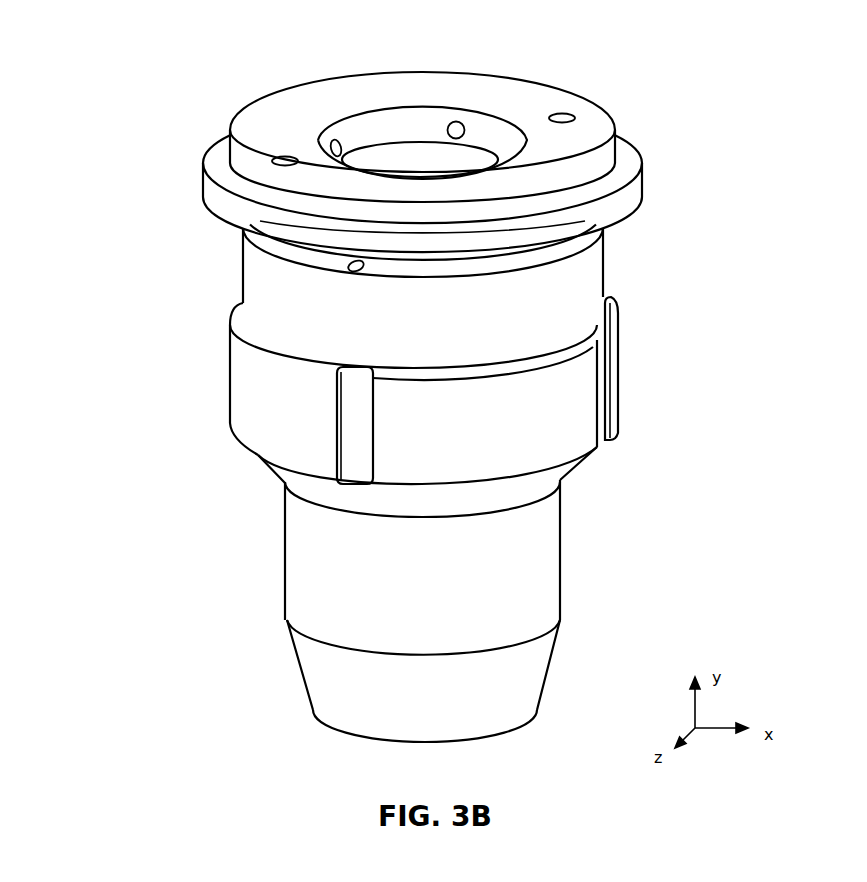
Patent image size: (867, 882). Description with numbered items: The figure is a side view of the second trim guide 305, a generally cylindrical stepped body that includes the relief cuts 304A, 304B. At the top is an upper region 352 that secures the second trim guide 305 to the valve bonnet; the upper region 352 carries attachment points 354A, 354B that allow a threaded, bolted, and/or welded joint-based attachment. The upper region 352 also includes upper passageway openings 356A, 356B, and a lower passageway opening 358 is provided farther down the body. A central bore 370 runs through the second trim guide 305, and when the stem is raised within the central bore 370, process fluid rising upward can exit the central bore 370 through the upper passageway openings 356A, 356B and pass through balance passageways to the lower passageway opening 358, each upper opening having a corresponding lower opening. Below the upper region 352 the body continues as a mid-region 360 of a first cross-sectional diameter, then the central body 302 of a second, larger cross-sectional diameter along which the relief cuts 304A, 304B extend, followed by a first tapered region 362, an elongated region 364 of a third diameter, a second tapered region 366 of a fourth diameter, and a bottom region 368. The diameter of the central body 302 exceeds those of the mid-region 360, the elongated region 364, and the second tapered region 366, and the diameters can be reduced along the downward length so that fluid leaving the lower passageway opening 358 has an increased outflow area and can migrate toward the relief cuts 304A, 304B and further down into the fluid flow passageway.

The second trim guide 305 is at (90, 110).
The central body 302 is at (253, 400).
The relief cut 304A is at (362, 465).
The relief cut 304B is at (603, 436).
The upper region 352 is at (627, 143).
The attachment point 354A is at (283, 158).
The attachment point 354B is at (560, 112).
The upper passageway opening 356A is at (344, 138).
The upper passageway opening 356B is at (457, 121).
The lower passageway opening 358 is at (367, 268).
The mid-region 360 is at (593, 292).
The first tapered region 362 is at (550, 478).
The elongated region 364 is at (548, 560).
The second tapered region 366 is at (540, 668).
The bottom region 368 is at (490, 728).
The central bore 370 is at (425, 162).